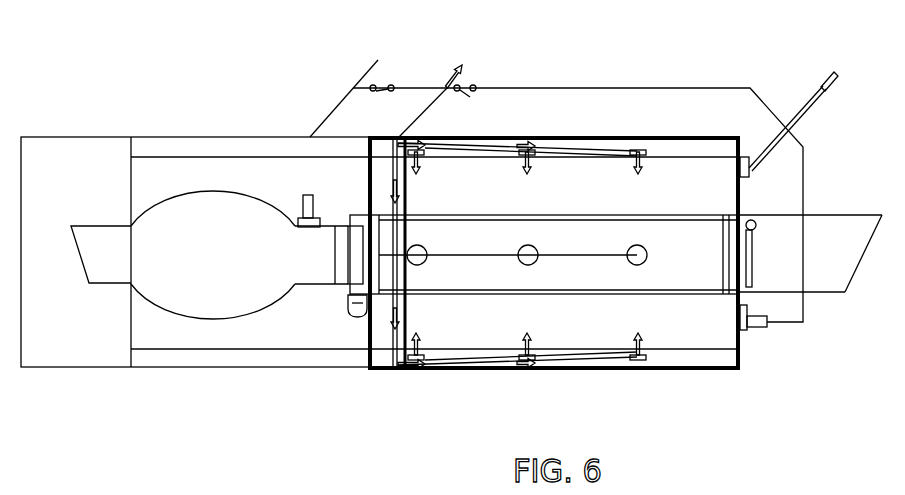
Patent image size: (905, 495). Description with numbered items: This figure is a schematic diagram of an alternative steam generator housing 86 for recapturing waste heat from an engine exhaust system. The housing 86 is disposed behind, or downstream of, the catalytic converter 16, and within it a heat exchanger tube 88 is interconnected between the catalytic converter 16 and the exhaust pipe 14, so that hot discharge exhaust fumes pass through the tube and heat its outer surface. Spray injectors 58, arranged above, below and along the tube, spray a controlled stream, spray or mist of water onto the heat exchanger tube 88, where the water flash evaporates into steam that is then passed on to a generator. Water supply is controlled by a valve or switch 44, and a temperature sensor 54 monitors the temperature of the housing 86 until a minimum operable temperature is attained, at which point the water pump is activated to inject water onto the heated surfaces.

The exhaust pipe 14 is at (460, 309).
The catalytic converter 16 is at (206, 303).
The valve or switch 44 is at (427, 59).
The temperature sensor 54 is at (770, 353).
The spray injectors 58 is at (547, 245).
The steam generator housing 86 is at (678, 80).
The heat exchanger tube 88 is at (544, 319).